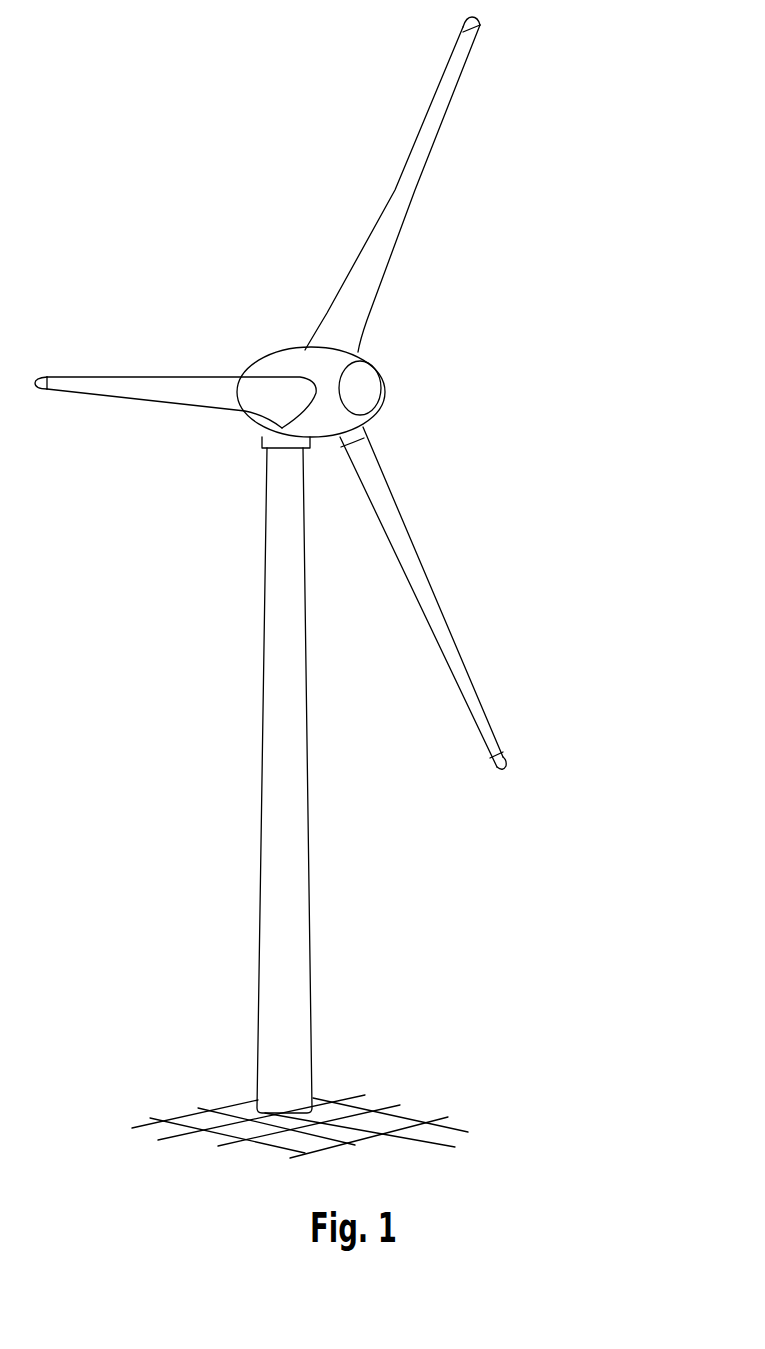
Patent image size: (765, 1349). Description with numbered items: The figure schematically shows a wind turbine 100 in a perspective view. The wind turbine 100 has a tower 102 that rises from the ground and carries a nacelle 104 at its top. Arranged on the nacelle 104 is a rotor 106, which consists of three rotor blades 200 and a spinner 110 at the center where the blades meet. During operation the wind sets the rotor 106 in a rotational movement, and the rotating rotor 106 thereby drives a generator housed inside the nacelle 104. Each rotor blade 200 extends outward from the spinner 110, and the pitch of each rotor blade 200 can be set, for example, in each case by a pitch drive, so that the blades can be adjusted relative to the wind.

The wind turbine 100 is at (222, 515).
The tower 102 is at (292, 883).
The nacelle 104 is at (277, 363).
The rotor 106 is at (448, 313).
The spinner 110 is at (366, 390).
The rotor blade 200 is at (425, 147).